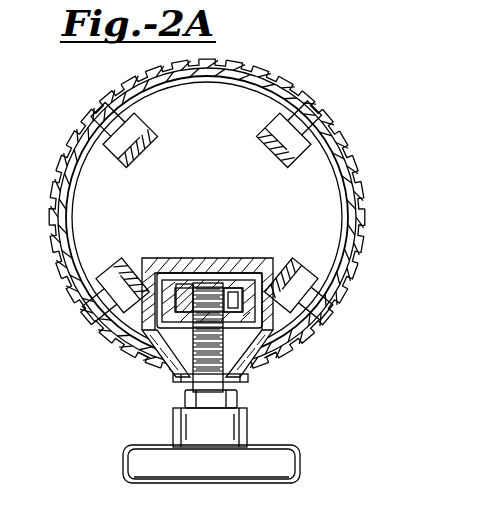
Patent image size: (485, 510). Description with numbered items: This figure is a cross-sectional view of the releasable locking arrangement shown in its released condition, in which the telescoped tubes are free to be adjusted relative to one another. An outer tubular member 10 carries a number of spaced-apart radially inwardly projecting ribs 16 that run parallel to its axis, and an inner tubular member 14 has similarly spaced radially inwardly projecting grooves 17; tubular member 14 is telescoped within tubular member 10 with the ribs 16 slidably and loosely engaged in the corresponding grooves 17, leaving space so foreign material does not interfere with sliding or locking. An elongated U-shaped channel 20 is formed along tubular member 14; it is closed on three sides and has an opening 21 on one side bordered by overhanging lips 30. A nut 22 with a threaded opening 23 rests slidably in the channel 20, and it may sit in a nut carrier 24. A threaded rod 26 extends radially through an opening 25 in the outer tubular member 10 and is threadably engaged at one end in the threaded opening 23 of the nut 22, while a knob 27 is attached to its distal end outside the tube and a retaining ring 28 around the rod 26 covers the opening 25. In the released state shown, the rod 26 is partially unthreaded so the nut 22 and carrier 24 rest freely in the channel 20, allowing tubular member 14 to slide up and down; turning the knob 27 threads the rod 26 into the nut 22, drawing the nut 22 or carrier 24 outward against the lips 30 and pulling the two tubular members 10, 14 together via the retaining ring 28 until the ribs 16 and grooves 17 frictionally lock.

The tubular member 10 is at (368, 213).
The tubular member 14 is at (83, 195).
The ribs 16 is at (100, 102).
The grooves 17 is at (128, 132).
The U-shaped channel 20 is at (214, 250).
The opening 21 is at (161, 368).
The nut 22 is at (237, 283).
The threaded opening 23 is at (128, 355).
The nut carrier 24 is at (163, 282).
The opening 25 is at (265, 372).
The threaded rod 26 is at (183, 290).
The knob 27 is at (275, 483).
The retaining ring 28 is at (240, 378).
The lips 30 is at (150, 360).